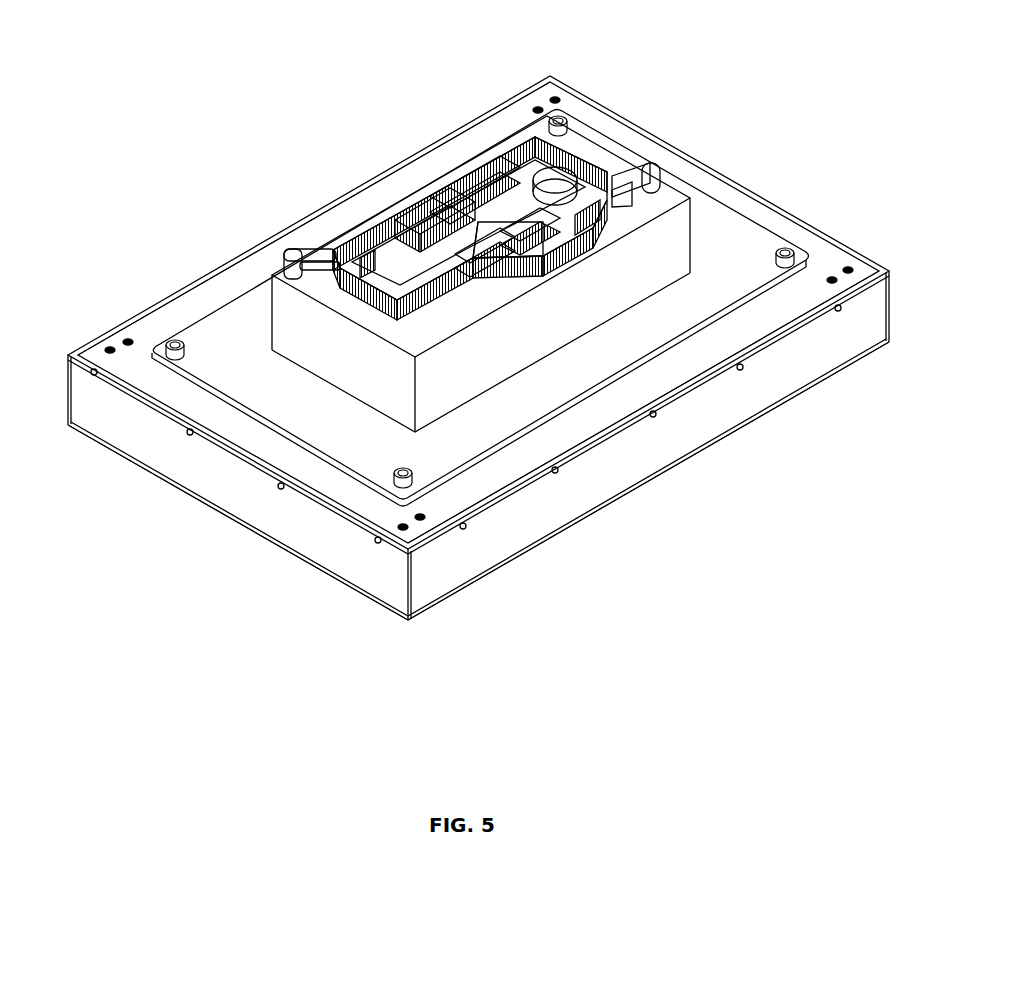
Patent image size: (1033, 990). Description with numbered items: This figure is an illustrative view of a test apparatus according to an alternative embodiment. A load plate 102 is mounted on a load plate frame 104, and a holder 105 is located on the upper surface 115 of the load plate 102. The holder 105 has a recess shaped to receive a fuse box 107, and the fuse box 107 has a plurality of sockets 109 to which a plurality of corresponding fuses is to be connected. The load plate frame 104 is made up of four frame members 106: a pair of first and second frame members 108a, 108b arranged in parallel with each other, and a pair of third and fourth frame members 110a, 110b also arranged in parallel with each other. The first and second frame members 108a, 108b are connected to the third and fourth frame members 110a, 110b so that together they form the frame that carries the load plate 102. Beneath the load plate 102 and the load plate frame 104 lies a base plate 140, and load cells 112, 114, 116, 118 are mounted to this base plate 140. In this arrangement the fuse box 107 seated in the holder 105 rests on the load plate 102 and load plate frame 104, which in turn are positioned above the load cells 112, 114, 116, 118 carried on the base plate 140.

The load plate 102 is at (567, 108).
The load plate frame 104 is at (571, 88).
The holder 105 is at (282, 245).
The frame member 106 is at (509, 134).
The fuse box 107 is at (488, 279).
The first frame member 108a is at (720, 361).
The second frame member 108b is at (374, 199).
The sockets 109 is at (439, 195).
The third frame member 110a is at (235, 428).
The fourth frame member 110b is at (706, 184).
The load cell 112 is at (855, 266).
The load cell 114 is at (421, 519).
The upper surface 115 is at (630, 150).
The load cell 116 is at (110, 350).
The load cell 118 is at (542, 104).
The base plate 140 is at (412, 624).